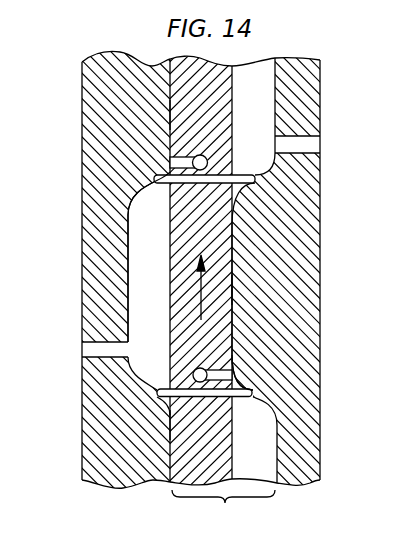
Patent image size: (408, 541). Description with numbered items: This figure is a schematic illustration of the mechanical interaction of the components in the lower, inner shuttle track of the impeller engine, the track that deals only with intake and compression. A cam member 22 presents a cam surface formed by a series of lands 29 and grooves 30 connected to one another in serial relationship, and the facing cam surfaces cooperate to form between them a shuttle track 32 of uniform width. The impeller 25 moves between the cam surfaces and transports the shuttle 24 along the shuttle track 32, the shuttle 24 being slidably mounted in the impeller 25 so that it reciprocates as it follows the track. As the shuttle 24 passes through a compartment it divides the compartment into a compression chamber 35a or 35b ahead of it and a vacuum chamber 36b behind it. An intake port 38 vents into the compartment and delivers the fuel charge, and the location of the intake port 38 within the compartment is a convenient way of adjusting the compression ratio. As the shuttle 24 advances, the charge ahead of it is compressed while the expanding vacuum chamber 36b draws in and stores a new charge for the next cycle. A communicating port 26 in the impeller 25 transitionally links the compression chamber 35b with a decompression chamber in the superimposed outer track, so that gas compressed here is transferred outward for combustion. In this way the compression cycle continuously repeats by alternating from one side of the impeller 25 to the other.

The cam member 22 is at (95, 188).
The shuttle 24 is at (242, 176).
The impeller 25 is at (203, 78).
The communicating port 26 is at (206, 156).
The land 29 is at (168, 117).
The groove 30 is at (278, 116).
The shuttle track 32 is at (223, 508).
The compression chamber 35a is at (238, 383).
The compression chamber 35b is at (165, 170).
The vacuum chamber 36b is at (146, 292).
The intake port 38 is at (305, 146).